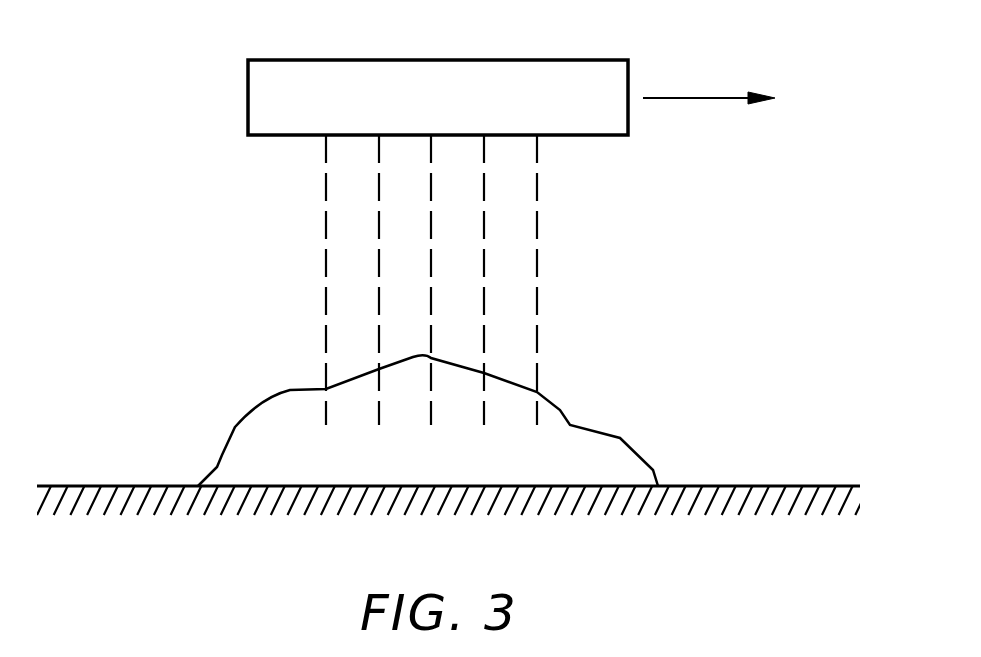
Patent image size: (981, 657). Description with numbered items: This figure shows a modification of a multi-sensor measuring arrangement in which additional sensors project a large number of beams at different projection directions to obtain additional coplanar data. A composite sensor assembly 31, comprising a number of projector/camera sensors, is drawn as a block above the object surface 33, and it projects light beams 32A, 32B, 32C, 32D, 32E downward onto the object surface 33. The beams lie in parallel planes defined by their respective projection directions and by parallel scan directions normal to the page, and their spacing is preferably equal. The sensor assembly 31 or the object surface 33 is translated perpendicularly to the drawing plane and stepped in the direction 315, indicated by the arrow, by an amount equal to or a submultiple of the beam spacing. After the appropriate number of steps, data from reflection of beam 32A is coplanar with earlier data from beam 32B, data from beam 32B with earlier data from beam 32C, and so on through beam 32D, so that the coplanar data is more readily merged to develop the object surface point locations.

The composite sensor assembly 31 is at (433, 67).
The stepping direction 315 is at (693, 98).
The light beam 32A is at (326, 233).
The light beam 32B is at (379, 296).
The light beam 32C is at (431, 230).
The light beam 32D is at (484, 279).
The light beam 32E is at (537, 320).
The object surface 33 is at (620, 438).